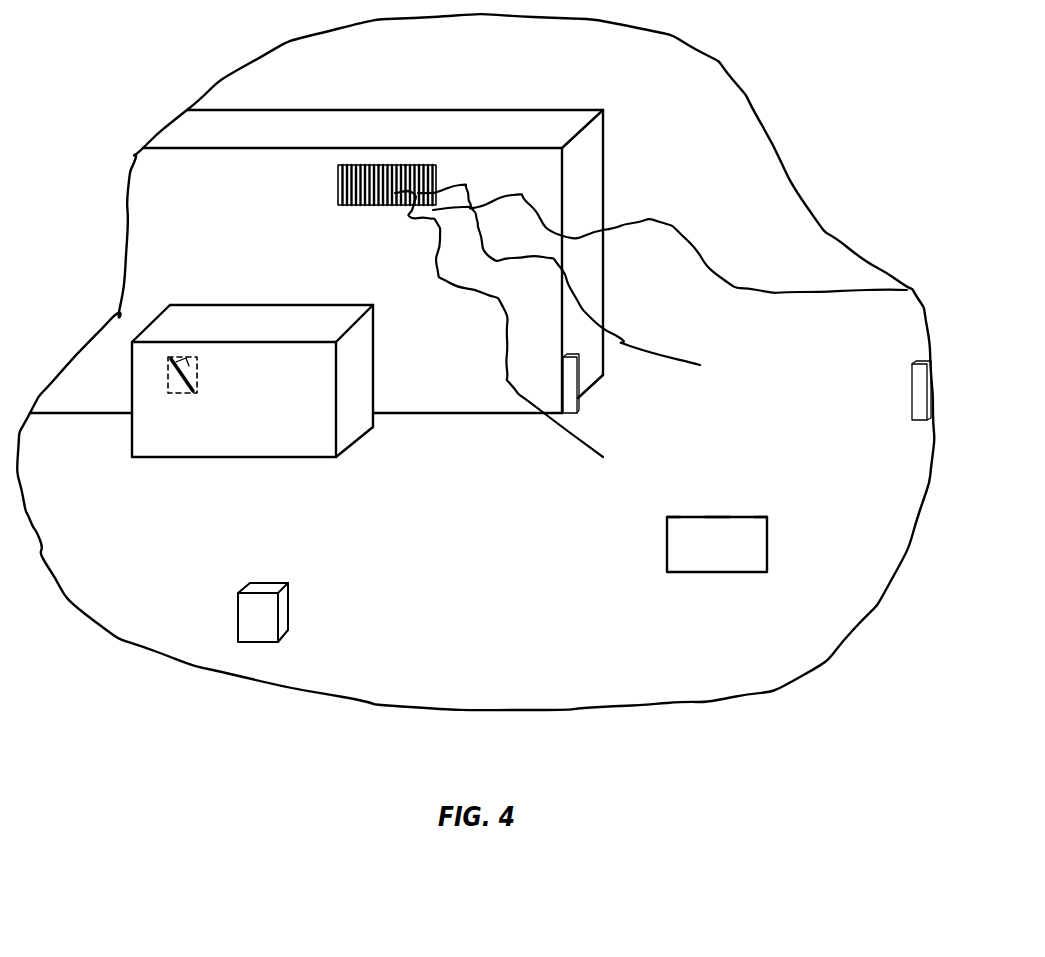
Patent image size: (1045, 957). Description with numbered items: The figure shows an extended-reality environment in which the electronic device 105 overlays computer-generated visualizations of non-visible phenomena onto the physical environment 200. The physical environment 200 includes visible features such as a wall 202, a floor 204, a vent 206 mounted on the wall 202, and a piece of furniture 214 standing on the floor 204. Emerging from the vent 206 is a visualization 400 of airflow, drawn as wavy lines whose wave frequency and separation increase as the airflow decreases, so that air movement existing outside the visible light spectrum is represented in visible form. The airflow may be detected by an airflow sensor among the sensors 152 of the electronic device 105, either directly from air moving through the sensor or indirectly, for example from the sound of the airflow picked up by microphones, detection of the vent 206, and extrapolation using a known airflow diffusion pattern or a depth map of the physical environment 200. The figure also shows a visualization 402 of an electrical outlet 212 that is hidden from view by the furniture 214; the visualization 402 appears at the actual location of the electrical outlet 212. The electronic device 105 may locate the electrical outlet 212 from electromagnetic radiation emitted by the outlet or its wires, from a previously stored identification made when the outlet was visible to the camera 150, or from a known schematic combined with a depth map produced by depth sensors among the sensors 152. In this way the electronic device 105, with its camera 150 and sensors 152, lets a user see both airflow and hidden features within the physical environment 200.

The physical environment 200 is at (677, 76).
The wall 202 is at (241, 190).
The floor 204 is at (603, 675).
The vent 206 is at (355, 207).
The visualization of airflow 400 is at (637, 221).
The visualization of electrical outlet 402 is at (195, 368).
The electrical outlet 212 is at (183, 393).
The furniture 214 is at (265, 458).
The electronic device 105 is at (715, 573).
The camera 150 is at (717, 517).
The sensors 152 is at (670, 517).